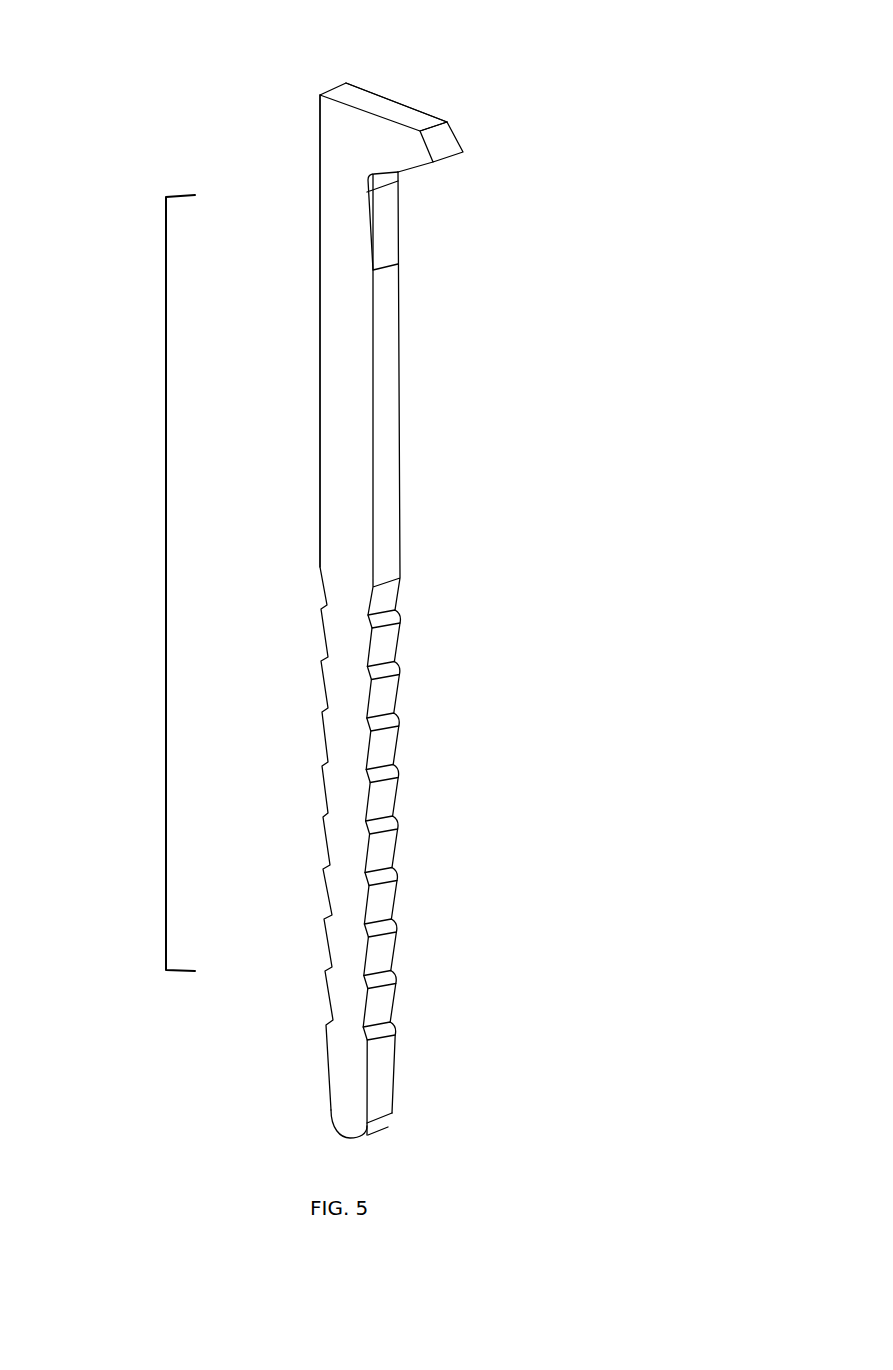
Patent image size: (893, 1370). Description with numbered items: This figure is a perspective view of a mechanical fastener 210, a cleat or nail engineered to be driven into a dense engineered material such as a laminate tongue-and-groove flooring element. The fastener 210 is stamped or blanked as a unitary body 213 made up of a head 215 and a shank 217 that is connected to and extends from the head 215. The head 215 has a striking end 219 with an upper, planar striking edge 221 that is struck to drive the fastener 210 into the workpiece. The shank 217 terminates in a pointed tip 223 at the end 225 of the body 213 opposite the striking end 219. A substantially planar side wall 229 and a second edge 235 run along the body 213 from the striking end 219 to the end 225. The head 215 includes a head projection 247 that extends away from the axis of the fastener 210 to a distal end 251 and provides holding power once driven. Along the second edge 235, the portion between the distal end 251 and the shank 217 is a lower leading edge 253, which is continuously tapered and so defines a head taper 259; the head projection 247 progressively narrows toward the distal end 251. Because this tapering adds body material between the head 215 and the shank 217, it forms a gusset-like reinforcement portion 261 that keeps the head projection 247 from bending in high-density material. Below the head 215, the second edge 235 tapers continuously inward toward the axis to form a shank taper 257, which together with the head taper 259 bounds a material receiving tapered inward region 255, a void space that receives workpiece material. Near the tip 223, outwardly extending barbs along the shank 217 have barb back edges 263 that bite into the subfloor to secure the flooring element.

The mechanical fastener 210 is at (177, 90).
The unitary body 213 is at (166, 582).
The head 215 is at (340, 123).
The shank 217 is at (350, 493).
The striking end 219 is at (335, 74).
The striking edge 221 is at (380, 108).
The pointed tip 223 is at (383, 1127).
The end of body 225 is at (381, 1145).
The side wall 229 is at (338, 370).
The second edge 235 is at (390, 309).
The head projection 247 is at (392, 143).
The distal end 251 is at (450, 158).
The lower leading edge 253 is at (410, 172).
The material receiving tapered inward region 255 is at (414, 231).
The shank taper 257 is at (385, 222).
The head taper 259 is at (427, 167).
The gusset-like reinforcement portion 261 is at (375, 160).
The barb back edges 263 is at (383, 988).